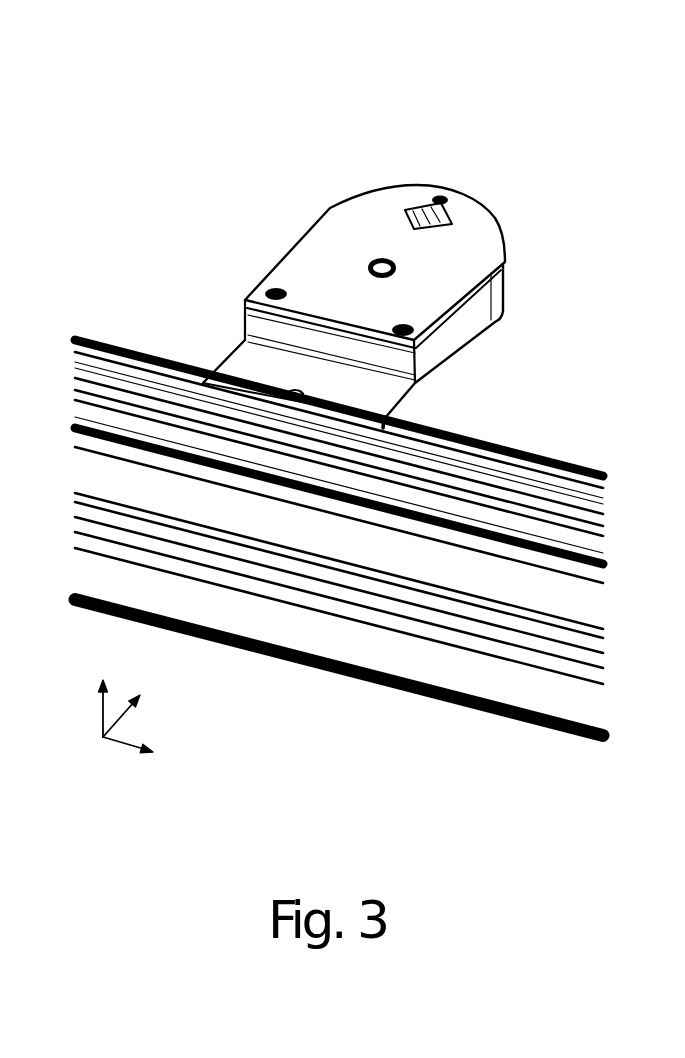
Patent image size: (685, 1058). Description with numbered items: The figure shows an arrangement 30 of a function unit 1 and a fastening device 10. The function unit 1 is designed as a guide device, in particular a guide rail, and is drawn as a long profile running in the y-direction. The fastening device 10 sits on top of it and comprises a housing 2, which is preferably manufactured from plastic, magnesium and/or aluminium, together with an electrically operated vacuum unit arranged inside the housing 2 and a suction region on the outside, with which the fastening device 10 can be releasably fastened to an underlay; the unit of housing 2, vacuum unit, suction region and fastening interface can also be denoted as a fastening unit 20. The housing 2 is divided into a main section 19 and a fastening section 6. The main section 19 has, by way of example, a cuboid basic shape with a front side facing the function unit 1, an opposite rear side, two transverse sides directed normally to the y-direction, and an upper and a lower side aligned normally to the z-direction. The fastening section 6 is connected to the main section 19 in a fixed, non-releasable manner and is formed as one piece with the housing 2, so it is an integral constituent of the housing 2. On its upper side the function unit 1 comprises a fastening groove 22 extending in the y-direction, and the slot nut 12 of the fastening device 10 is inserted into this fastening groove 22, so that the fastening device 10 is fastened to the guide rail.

The function unit 1 is at (407, 662).
The housing 2 is at (375, 259).
The fastening section 6 is at (242, 358).
The fastening device 10 is at (328, 282).
The slot nut 12 is at (400, 420).
The main section 19 is at (368, 205).
The fastening unit 20 is at (240, 254).
The fastening groove 22 is at (478, 446).
The measuring arrangement 30 is at (172, 130).